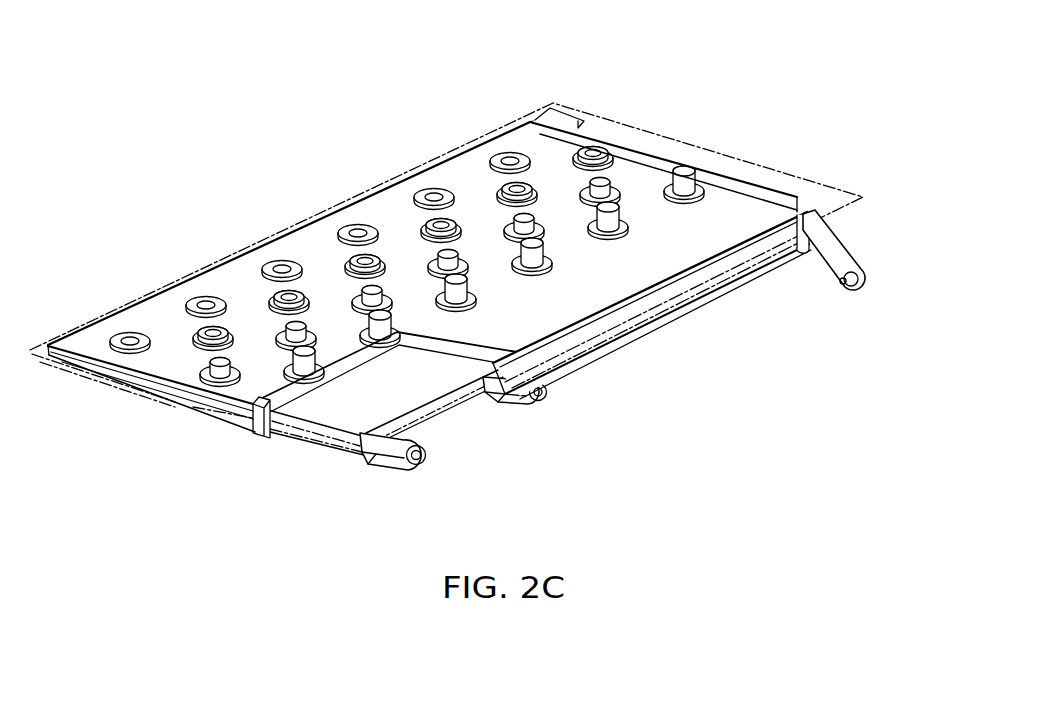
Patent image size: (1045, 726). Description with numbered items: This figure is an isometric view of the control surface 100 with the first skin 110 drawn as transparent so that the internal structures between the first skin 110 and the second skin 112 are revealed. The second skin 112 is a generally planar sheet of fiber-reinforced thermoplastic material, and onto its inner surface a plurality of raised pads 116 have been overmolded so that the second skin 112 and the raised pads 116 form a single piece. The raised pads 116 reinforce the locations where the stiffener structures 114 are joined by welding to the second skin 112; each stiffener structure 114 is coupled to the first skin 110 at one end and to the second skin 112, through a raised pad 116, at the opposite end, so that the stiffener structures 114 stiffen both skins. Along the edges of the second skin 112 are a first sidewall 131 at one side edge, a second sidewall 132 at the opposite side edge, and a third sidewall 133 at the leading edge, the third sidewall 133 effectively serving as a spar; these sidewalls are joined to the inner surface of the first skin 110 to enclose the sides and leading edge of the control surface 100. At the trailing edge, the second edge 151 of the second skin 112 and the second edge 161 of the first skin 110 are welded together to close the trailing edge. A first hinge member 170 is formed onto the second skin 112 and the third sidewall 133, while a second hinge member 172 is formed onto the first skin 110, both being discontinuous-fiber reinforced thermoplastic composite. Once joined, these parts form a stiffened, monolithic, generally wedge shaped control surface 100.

The control surface 100 is at (476, 258).
The first skin 110 is at (728, 160).
The second skin 112 is at (652, 305).
The stiffener structures 114 is at (684, 168).
The raised pads 116 is at (422, 256).
The first sidewall 131 is at (222, 395).
The second sidewall 132 is at (770, 196).
The third sidewall 133 is at (723, 286).
The second edge 151 is at (289, 233).
The second edge 161 is at (342, 216).
The first hinge member 170 is at (848, 257).
The second hinge member 172 is at (432, 470).